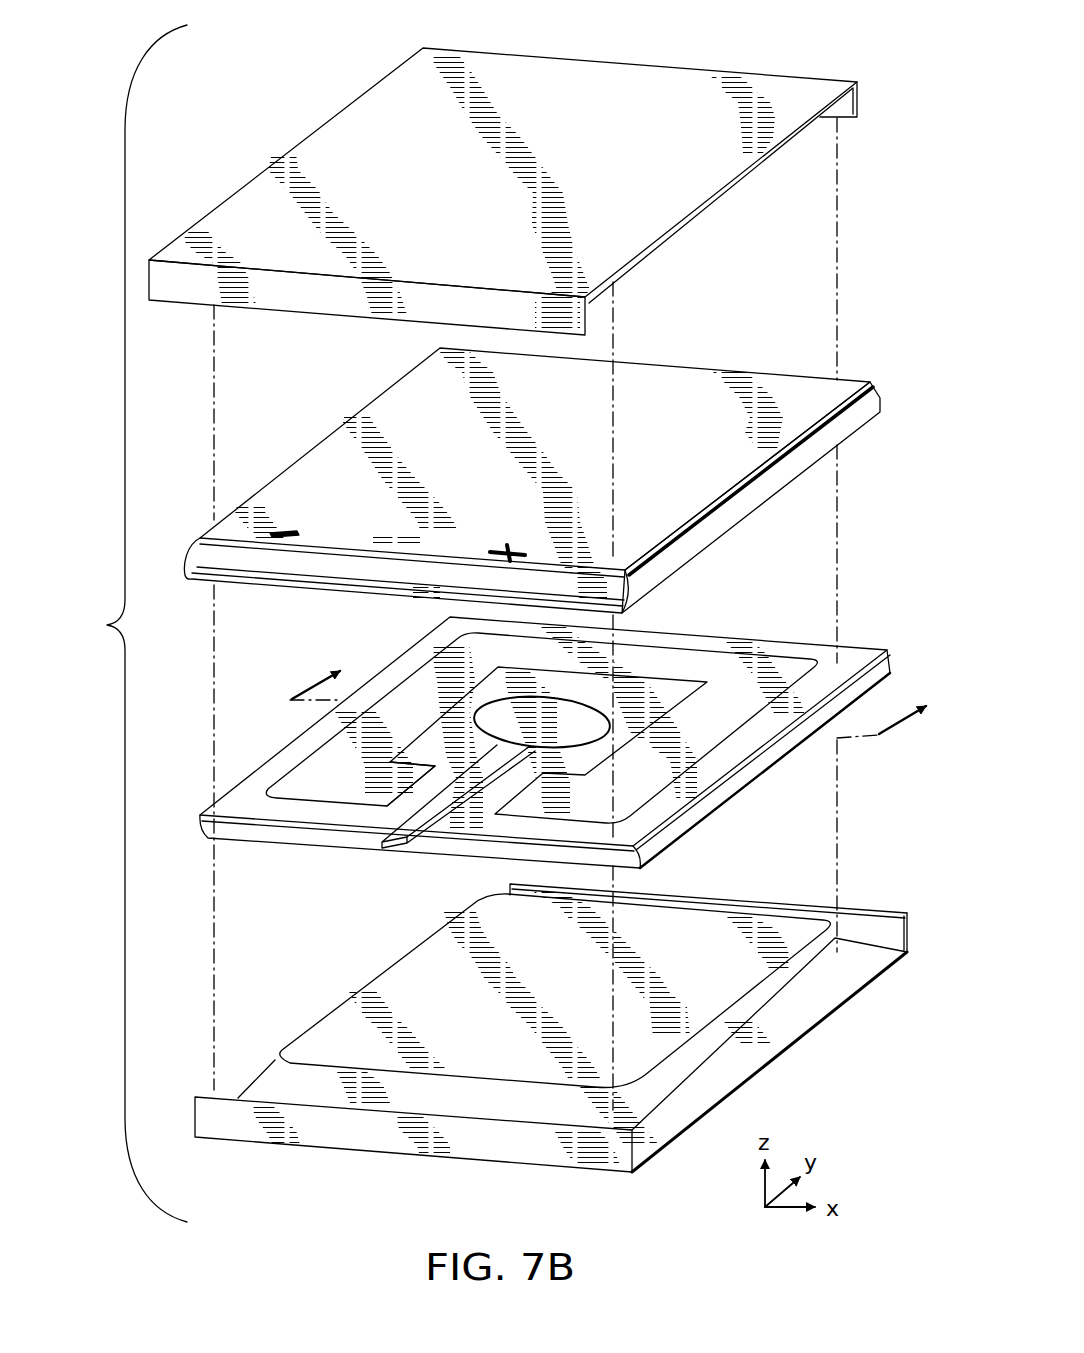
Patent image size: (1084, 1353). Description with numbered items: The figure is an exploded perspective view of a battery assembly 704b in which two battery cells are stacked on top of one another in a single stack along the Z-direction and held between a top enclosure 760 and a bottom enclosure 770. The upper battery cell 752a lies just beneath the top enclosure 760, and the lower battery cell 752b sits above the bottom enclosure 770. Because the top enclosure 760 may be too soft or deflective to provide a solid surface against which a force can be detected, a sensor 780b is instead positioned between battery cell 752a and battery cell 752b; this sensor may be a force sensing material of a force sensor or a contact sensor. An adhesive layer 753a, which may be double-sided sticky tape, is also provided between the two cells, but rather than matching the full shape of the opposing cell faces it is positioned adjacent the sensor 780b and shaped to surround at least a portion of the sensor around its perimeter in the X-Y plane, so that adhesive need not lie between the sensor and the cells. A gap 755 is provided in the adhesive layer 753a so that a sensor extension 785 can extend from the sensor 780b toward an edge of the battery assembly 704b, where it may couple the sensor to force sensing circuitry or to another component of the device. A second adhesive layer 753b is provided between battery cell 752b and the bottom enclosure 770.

The battery assembly 704b is at (113, 623).
The top enclosure 760 is at (823, 76).
The battery cell 752a is at (878, 400).
The battery cell 752b is at (581, 758).
The adhesive layer 753a is at (292, 779).
The gap 755 is at (415, 794).
The sensor 780b is at (495, 724).
The sensor extension 785 is at (407, 829).
The bottom enclosure 770 is at (551, 1014).
The adhesive layer 753b is at (338, 1009).